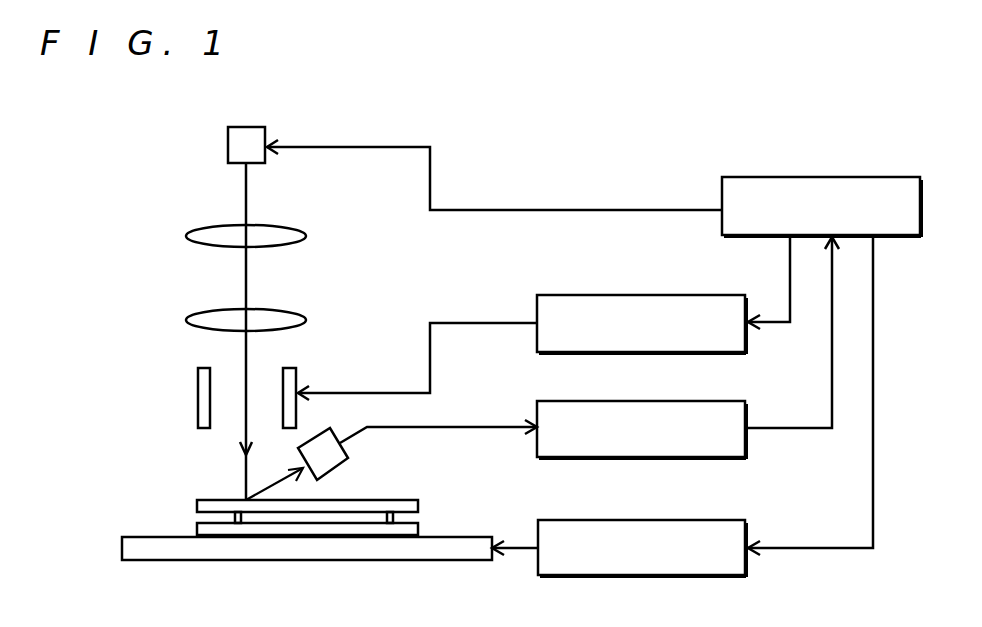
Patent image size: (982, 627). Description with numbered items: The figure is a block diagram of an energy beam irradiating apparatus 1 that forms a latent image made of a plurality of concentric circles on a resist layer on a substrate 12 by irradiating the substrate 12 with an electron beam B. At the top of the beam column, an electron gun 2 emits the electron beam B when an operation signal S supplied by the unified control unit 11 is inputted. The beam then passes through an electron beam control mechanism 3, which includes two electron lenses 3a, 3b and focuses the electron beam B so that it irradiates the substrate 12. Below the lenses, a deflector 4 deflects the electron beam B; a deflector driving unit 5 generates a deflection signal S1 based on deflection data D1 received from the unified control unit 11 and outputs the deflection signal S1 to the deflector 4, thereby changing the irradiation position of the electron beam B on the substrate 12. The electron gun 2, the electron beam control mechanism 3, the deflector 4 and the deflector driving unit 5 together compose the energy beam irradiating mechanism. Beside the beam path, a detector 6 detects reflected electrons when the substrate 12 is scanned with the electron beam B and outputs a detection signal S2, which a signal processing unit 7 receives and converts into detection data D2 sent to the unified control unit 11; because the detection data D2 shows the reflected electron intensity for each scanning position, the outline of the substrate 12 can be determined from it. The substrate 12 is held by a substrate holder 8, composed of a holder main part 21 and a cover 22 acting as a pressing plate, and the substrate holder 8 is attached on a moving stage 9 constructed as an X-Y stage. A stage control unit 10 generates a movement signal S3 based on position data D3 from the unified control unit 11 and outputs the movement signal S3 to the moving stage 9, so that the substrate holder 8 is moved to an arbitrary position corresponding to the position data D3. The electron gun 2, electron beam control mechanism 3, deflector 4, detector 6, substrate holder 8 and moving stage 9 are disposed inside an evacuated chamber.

The energy beam irradiating apparatus 1 is at (508, 152).
The electron gun 2 is at (265, 137).
The electron beam B is at (248, 197).
The electron beam control mechanism 3 is at (208, 299).
The electron lens 3a is at (188, 236).
The electron lens 3b is at (228, 341).
The deflector 4 is at (198, 408).
The deflector driving unit 5 is at (660, 296).
The detector 6 is at (345, 462).
The signal processing unit 7 is at (660, 401).
The substrate holder 8 is at (259, 520).
The moving stage 9 is at (447, 537).
The stage control unit 10 is at (722, 520).
The unified control unit 11 is at (883, 177).
The substrate 12 is at (262, 515).
The holder main part 21 is at (197, 530).
The cover 22 is at (197, 500).
The operation signal S is at (648, 208).
The deflection signal S1 is at (488, 323).
The detection signal S2 is at (488, 426).
The movement signal S3 is at (520, 545).
The deflection data D1 is at (788, 261).
The detection data D2 is at (830, 382).
The position data D3 is at (870, 485).